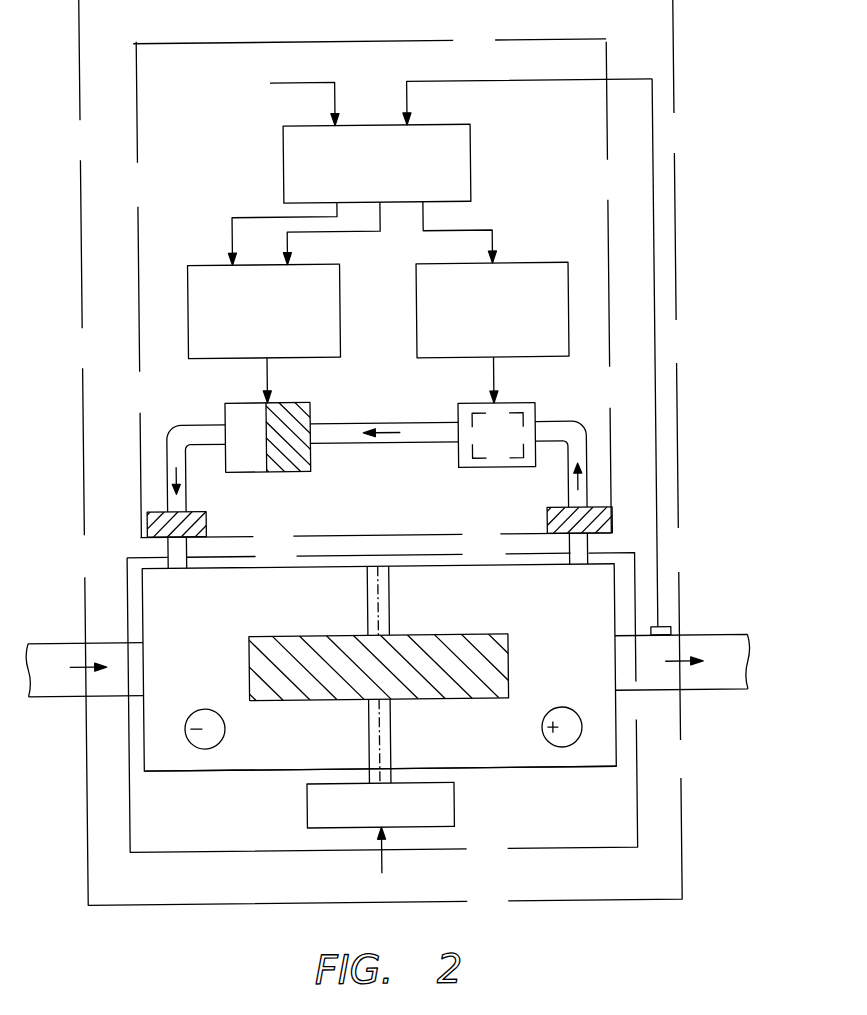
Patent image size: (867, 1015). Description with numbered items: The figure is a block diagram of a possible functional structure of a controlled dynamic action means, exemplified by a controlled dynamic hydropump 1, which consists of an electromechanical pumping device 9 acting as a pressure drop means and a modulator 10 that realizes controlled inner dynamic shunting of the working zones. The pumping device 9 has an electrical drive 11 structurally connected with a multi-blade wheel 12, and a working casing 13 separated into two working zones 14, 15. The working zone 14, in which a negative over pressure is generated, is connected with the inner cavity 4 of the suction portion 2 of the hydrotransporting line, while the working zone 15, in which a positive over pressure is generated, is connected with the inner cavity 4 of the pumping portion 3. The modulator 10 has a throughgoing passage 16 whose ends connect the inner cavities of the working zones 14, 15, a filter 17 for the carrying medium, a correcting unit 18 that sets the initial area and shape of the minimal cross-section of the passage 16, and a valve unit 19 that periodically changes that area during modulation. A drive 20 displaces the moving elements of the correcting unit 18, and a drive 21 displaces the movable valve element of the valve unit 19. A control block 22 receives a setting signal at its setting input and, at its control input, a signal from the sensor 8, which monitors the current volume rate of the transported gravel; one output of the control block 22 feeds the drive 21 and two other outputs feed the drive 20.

The controlled dynamic hydropump 1 is at (677, 116).
The suction portion 2 is at (54, 639).
The pumping portion 3 is at (705, 693).
The inner cavity 4 is at (68, 650).
The sensor 8 is at (662, 626).
The electromechanical pumping device 9 is at (624, 554).
The modulator 10 is at (611, 204).
The electrical drive 11 is at (450, 801).
The multi-blade wheel 12 is at (261, 667).
The working casing 13 is at (274, 766).
The working zone 14 is at (157, 610).
The working zone 15 is at (590, 752).
The throughgoing passage 16 is at (574, 422).
The filter 17 is at (153, 506).
The correcting unit 18 is at (264, 427).
The valve unit 19 is at (531, 414).
The drive of the correcting unit 20 is at (212, 342).
The drive of the valve unit 21 is at (539, 293).
The control block 22 is at (311, 149).